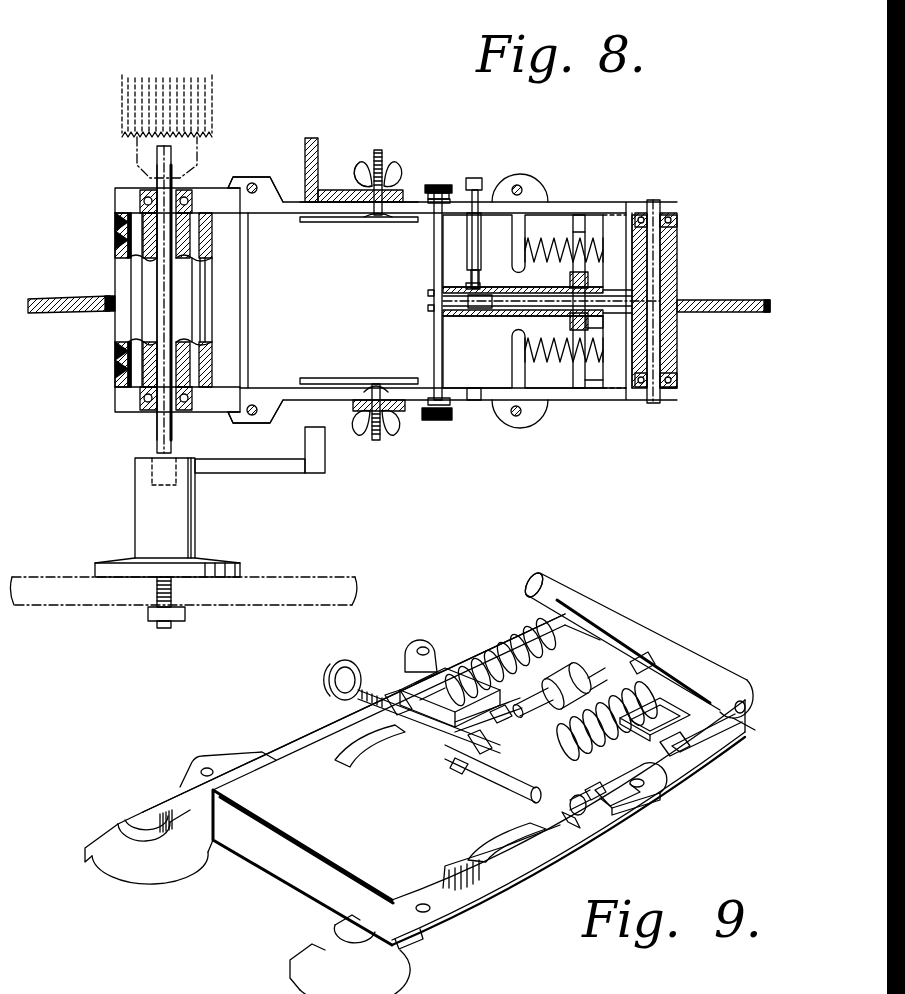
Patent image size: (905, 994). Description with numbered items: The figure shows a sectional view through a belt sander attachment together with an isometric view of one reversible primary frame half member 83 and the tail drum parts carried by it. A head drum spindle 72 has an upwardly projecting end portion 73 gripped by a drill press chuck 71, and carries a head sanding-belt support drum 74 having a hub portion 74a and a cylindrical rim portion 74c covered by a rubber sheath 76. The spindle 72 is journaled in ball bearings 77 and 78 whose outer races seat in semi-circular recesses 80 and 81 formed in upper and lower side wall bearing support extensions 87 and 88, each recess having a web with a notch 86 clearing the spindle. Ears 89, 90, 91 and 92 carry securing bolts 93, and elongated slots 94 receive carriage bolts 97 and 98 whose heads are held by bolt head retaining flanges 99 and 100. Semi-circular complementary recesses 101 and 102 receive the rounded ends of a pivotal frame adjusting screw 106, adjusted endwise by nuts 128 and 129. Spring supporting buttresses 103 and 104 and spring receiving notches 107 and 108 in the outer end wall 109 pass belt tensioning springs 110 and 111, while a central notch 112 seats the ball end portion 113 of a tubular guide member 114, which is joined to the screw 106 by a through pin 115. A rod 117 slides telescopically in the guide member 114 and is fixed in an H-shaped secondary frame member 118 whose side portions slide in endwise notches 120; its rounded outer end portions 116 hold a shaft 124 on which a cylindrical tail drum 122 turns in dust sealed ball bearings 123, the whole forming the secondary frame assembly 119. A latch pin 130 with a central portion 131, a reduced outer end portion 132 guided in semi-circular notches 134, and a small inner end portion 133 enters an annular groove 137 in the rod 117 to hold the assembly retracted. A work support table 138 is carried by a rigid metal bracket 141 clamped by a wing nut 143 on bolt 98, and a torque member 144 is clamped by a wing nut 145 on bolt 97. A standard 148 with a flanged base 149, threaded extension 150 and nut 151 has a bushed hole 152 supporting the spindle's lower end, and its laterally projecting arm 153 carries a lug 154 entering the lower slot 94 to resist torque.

In FIG. 8, the drill press chuck 71 is at (212, 112).
In FIG. 8, the head drum spindle 72 is at (160, 184).
In FIG. 8, the upwardly projecting end portion 73 is at (158, 157).
In FIG. 8, the head sanding-belt support drum 74 is at (122, 343).
In FIG. 8, the hub portion 74a is at (143, 232).
In FIG. 8, the cylindrical rim portion 74c is at (122, 242).
In FIG. 8, the rubber sheath 76 is at (121, 257).
In FIG. 8, the ball bearing 77 is at (183, 195).
In FIG. 8, the ball bearing 78 is at (148, 408).
In FIG. 8, the semi-circular recess 80 is at (190, 197).
In FIG. 9, the semi-circular recess 80 is at (175, 830).
In FIG. 8, the semi-circular recess 81 is at (192, 388).
In FIG. 9, the semi-circular recess 81 is at (345, 932).
In FIG. 8, the primary frame half member 83 is at (336, 408).
In FIG. 9, the primary frame half member 83 is at (242, 755).
In FIG. 8, the notch 86 is at (180, 408).
In FIG. 9, the notch 86 is at (130, 818).
In FIG. 8, the upper side wall bearing support extension 87 is at (118, 197).
In FIG. 9, the upper side wall bearing support extension 87 is at (146, 876).
In FIG. 8, the lower side wall bearing support extension 88 is at (118, 404).
In FIG. 9, the lower side wall bearing support extension 88 is at (295, 985).
In FIG. 8, the ear 89 is at (270, 190).
In FIG. 9, the ear 89 is at (184, 775).
In FIG. 8, the ear 90 is at (530, 186).
In FIG. 9, the ear 90 is at (432, 645).
In FIG. 8, the ear 91 is at (272, 414).
In FIG. 9, the ear 91 is at (425, 945).
In FIG. 8, the ear 92 is at (536, 406).
In FIG. 9, the ear 92 is at (660, 792).
In FIG. 8, the securing bolt 93 is at (254, 184).
In FIG. 9, the securing bolt 93 is at (315, 840).
In FIG. 8, the elongated slot 94 is at (347, 224).
In FIG. 9, the elongated slot 94 is at (322, 722).
In FIG. 8, the carriage bolt 97 is at (381, 155).
In FIG. 8, the carriage bolt 98 is at (380, 434).
In FIG. 8, the bolt head retaining flange 99 is at (318, 224).
In FIG. 9, the bolt head retaining flange 99 is at (352, 765).
In FIG. 8, the bolt head retaining flange 100 is at (356, 379).
In FIG. 9, the bolt head retaining flange 100 is at (497, 835).
In FIG. 8, the semi-circular complementary recess 101 is at (426, 199).
In FIG. 9, the semi-circular complementary recess 101 is at (330, 682).
In FIG. 8, the semi-circular complementary recess 102 is at (449, 403).
In FIG. 9, the semi-circular complementary recess 102 is at (575, 822).
In FIG. 8, the spring supporting buttress 103 is at (514, 236).
In FIG. 9, the spring supporting buttress 103 is at (443, 665).
In FIG. 8, the spring supporting buttress 104 is at (512, 352).
In FIG. 9, the spring supporting buttress 104 is at (630, 804).
In FIG. 8, the pivotal frame adjusting screw 106 is at (433, 323).
In FIG. 9, the pivotal frame adjusting screw 106 is at (430, 738).
In FIG. 8, the spring receiving notch 107 is at (584, 232).
In FIG. 9, the spring receiving notch 107 is at (497, 712).
In FIG. 8, the spring receiving notch 108 is at (593, 380).
In FIG. 9, the spring receiving notch 108 is at (672, 750).
In FIG. 8, the outer end wall 109 is at (586, 322).
In FIG. 9, the outer end wall 109 is at (548, 706).
In FIG. 8, the belt tensioning spring 110 is at (565, 238).
In FIG. 9, the belt tensioning spring 110 is at (493, 648).
In FIG. 8, the belt tensioning spring 111 is at (551, 360).
In FIG. 9, the belt tensioning spring 111 is at (660, 765).
In FIG. 8, the central notch 112 is at (588, 320).
In FIG. 9, the central notch 112 is at (647, 667).
In FIG. 8, the ball end portion 113 is at (588, 282).
In FIG. 9, the ball end portion 113 is at (563, 675).
In FIG. 8, the tubular guide member 114 is at (512, 313).
In FIG. 9, the tubular guide member 114 is at (456, 724).
In FIG. 8, the through pin 115 is at (430, 300).
In FIG. 9, the through pin 115 is at (456, 762).
In FIG. 8, the outer end portion 116 is at (670, 402).
In FIG. 9, the outer end portion 116 is at (745, 724).
In FIG. 8, the rod 117 is at (552, 298).
In FIG. 9, the rod 117 is at (620, 622).
In FIG. 8, the H-shaped secondary frame member 118 is at (650, 346).
In FIG. 9, the H-shaped secondary frame member 118 is at (549, 584).
In FIG. 8, the secondary frame assembly 119 is at (686, 397).
In FIG. 9, the secondary frame assembly 119 is at (655, 645).
In FIG. 8, the endwise notch 120 is at (574, 213).
In FIG. 9, the endwise notch 120 is at (690, 762).
In FIG. 8, the cylindrical tail drum 122 is at (670, 364).
In FIG. 9, the cylindrical tail drum 122 is at (722, 676).
In FIG. 8, the dust sealed ball bearing 123 is at (676, 219).
In FIG. 8, the shaft 124 is at (655, 248).
In FIG. 9, the shaft 124 is at (745, 703).
In FIG. 8, the nut 128 is at (437, 184).
In FIG. 9, the nut 128 is at (345, 660).
In FIG. 8, the nut 129 is at (446, 420).
In FIG. 8, the latch pin 130 is at (478, 205).
In FIG. 9, the latch pin 130 is at (582, 812).
In FIG. 8, the central portion 131 is at (479, 275).
In FIG. 9, the central portion 131 is at (530, 792).
In FIG. 8, the reduced outer end portion 132 is at (472, 178).
In FIG. 9, the reduced outer end portion 132 is at (600, 798).
In FIG. 8, the small inner end portion 133 is at (466, 286).
In FIG. 9, the small inner end portion 133 is at (472, 748).
In FIG. 8, the semi-circular notch 134 is at (468, 222).
In FIG. 9, the semi-circular notch 134 is at (392, 692).
In FIG. 8, the annular groove 137 is at (470, 311).
In FIG. 8, the work support table 138 is at (68, 286).
In FIG. 8, the rigid metal bracket 141 is at (399, 411).
In FIG. 8, the wing nut 143 is at (392, 436).
In FIG. 8, the torque member 144 is at (318, 142).
In FIG. 8, the wing nut 145 is at (360, 170).
In FIG. 8, the standard 148 is at (140, 499).
In FIG. 8, the flanged base 149 is at (242, 567).
In FIG. 8, the threaded extension 150 is at (172, 596).
In FIG. 8, the nut 151 is at (182, 620).
In FIG. 8, the bushed hole 152 is at (186, 462).
In FIG. 8, the laterally projecting arm 153 is at (268, 463).
In FIG. 8, the lug 154 is at (312, 447).